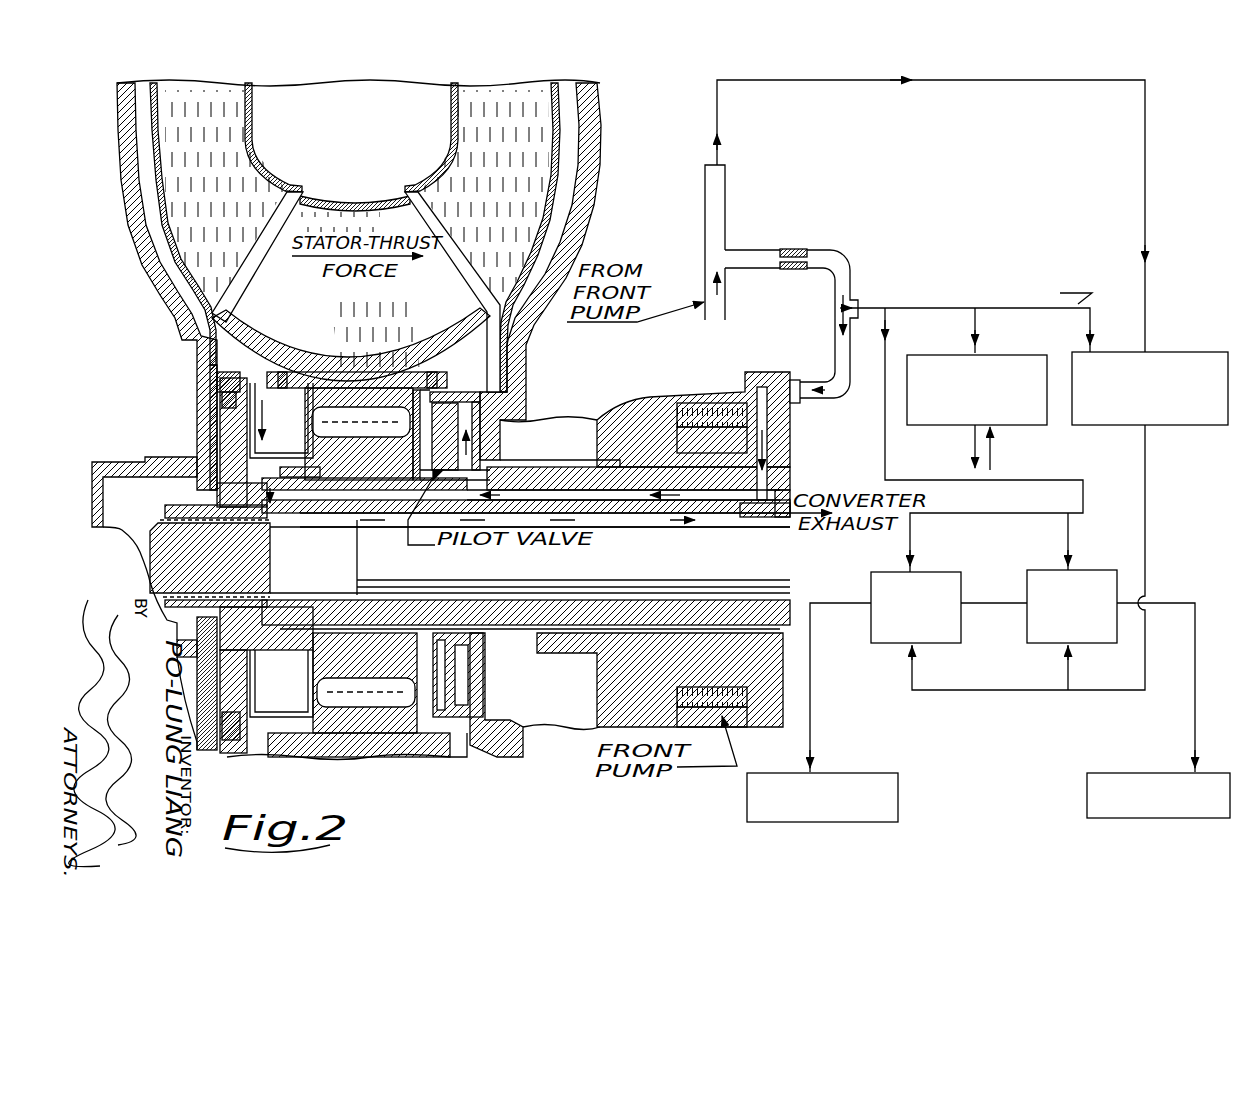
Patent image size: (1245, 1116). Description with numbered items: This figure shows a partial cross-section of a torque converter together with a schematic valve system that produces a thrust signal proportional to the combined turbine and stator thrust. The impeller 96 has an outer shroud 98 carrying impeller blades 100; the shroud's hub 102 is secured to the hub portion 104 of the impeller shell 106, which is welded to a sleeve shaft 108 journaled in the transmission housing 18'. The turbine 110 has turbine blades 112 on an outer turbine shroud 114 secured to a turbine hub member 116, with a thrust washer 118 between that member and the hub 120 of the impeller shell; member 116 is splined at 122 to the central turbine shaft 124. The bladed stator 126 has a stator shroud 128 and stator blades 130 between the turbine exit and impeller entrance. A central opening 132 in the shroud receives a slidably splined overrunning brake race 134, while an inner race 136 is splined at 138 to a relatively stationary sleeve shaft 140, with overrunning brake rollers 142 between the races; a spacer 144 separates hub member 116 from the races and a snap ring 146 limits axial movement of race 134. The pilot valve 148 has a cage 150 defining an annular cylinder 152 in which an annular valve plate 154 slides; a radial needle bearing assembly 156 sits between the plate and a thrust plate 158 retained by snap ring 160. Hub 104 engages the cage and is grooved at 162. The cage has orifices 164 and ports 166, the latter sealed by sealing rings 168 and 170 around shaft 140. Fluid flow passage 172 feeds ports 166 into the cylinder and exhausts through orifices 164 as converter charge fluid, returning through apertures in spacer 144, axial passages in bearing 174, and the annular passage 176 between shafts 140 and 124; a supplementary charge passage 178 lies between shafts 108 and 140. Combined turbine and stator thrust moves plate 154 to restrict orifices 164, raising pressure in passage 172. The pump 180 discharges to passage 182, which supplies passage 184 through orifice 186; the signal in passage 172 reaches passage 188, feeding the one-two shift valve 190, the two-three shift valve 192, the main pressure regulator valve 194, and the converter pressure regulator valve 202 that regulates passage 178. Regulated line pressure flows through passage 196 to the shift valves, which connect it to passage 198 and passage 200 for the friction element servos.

The transmission housing 18' is at (125, 603).
The torque converter impeller 96 is at (538, 120).
The outer shroud 98 is at (566, 138).
The impeller blades 100 is at (535, 93).
The hub 102 is at (528, 341).
The hub portion 104 is at (511, 721).
The impeller shell 106 is at (597, 170).
The sleeve shaft 108 is at (590, 620).
The turbine 110 is at (172, 148).
The turbine blades 112 is at (170, 117).
The outer turbine shroud 114 is at (152, 94).
The turbine hub member 116 is at (205, 427).
The thrust washer 118 is at (213, 455).
The hub of the impeller shell 120 is at (221, 440).
The spline 122 is at (190, 503).
The central turbine shaft 124 is at (783, 578).
The bladed stator 126 is at (446, 259).
The stator shroud 128 is at (366, 380).
The stator blades 130 is at (360, 202).
The central opening 132 is at (352, 372).
The overrunning brake race 134 is at (392, 388).
The overrunning brake inner race 136 is at (356, 625).
The splined connection 138 is at (322, 497).
The relatively stationary sleeve shaft 140 is at (538, 650).
The overrunning brake rollers 142 is at (304, 396).
The spacer 144 is at (286, 388).
The snap ring 146 is at (262, 385).
The pilot valve 148 is at (471, 740).
The cage 150 is at (484, 673).
The annular cylinder 152 is at (498, 442).
The annular valve ring or plate 154 is at (446, 733).
The radial needle bearing assembly 156 is at (411, 625).
The thrust plate 158 is at (376, 740).
The snap ring 160 is at (452, 392).
The radial grooves 162 is at (523, 401).
The orifices 164 is at (488, 357).
The ports 166 is at (502, 458).
The sealing ring 168 is at (452, 625).
The sealing ring 170 is at (486, 620).
The fluid flow passage 172 is at (676, 500).
The bearing 174 is at (343, 515).
The annular passage 176 is at (687, 515).
The converter charge flow passage 178 is at (563, 480).
The engine driven positive displacement pump 180 is at (735, 396).
The passage 182 is at (726, 205).
The passage 184 is at (848, 273).
The flow restricting orifice 186 is at (793, 249).
The passage 188 is at (897, 311).
The one-two shift valve 190 is at (1083, 571).
The two-three shift valve 192 is at (948, 572).
The main pressure regulator valve 194 is at (1208, 333).
The passage 196 is at (1108, 693).
The passage 198 is at (1200, 590).
The passage 200 is at (815, 741).
The converter pressure regulator valve 202 is at (1028, 330).